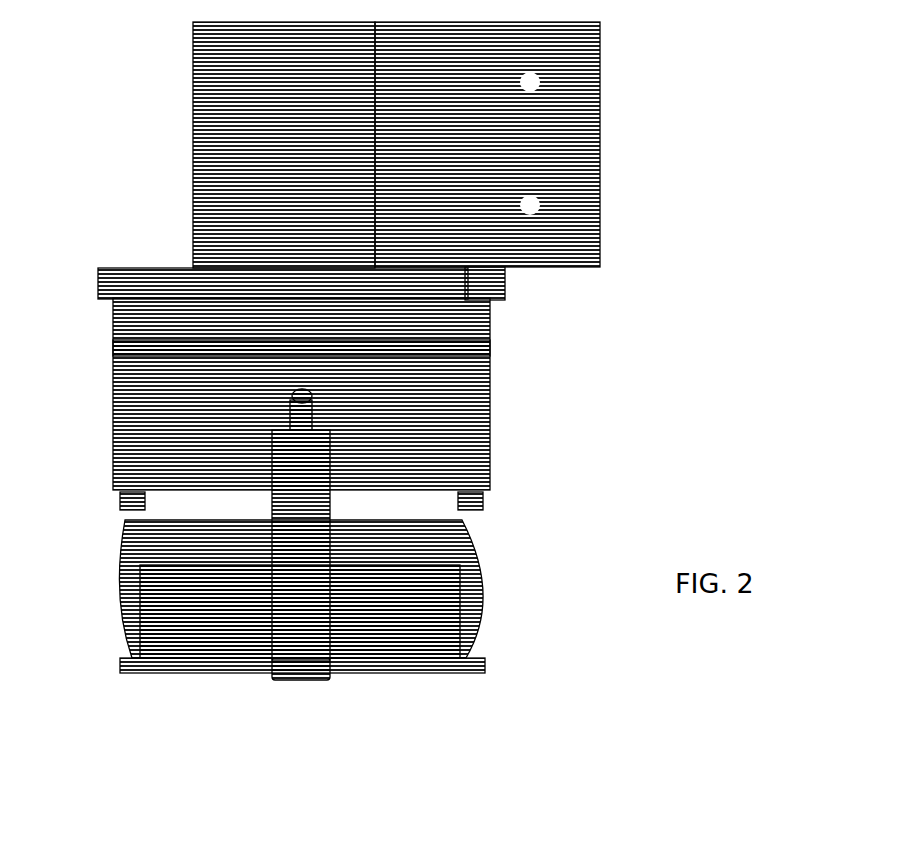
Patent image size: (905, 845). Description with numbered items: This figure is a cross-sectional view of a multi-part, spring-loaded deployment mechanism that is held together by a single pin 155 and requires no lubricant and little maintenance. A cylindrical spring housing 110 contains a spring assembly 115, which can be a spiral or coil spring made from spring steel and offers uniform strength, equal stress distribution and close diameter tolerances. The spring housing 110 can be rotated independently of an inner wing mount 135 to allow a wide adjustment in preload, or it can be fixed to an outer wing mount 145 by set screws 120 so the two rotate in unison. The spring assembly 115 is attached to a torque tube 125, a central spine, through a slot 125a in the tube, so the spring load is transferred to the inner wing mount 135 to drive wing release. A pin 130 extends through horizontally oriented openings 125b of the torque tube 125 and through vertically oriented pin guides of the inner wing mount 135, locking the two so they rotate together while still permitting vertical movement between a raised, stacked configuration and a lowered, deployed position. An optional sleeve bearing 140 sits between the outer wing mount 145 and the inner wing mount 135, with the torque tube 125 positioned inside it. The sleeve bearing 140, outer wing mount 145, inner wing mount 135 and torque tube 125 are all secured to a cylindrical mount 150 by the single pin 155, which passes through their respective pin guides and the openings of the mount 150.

The spring housing 110 is at (477, 673).
The spring assembly 115 is at (407, 647).
The set screws 120 is at (475, 587).
The torque tube 125 is at (270, 678).
The slot 125a is at (303, 680).
The openings 125b is at (302, 398).
The pin 130 is at (302, 398).
The inner wing mount 135 is at (203, 138).
The sleeve bearing 140 is at (187, 453).
The outer wing mount 145 is at (145, 288).
The mount 150 is at (488, 322).
The single pin 155 is at (488, 365).